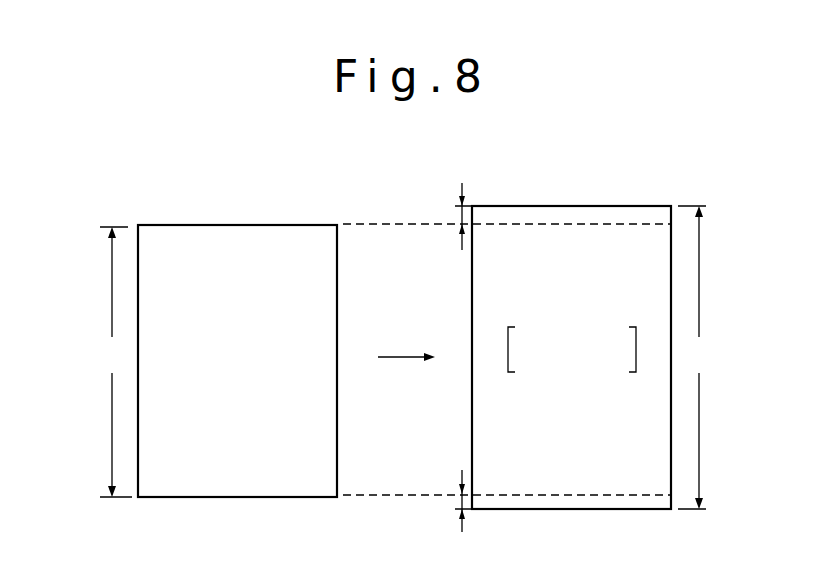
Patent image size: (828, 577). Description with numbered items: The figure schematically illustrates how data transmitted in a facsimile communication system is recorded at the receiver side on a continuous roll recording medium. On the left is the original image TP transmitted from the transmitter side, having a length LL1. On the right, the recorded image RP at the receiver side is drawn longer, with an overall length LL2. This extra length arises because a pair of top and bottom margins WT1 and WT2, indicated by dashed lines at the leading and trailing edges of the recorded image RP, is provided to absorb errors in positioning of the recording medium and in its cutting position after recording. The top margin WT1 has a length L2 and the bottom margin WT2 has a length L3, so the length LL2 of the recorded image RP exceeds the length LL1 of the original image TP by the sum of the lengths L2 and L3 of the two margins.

The original image TP is at (248, 483).
The recorded image RP is at (487, 306).
The length of the original image LL1 is at (107, 362).
The length of the recorded image LL2 is at (700, 357).
The length of top margin L2 is at (460, 210).
The length of bottom margin L3 is at (460, 503).
The top margin WT1 is at (616, 220).
The bottom margin WT2 is at (607, 497).